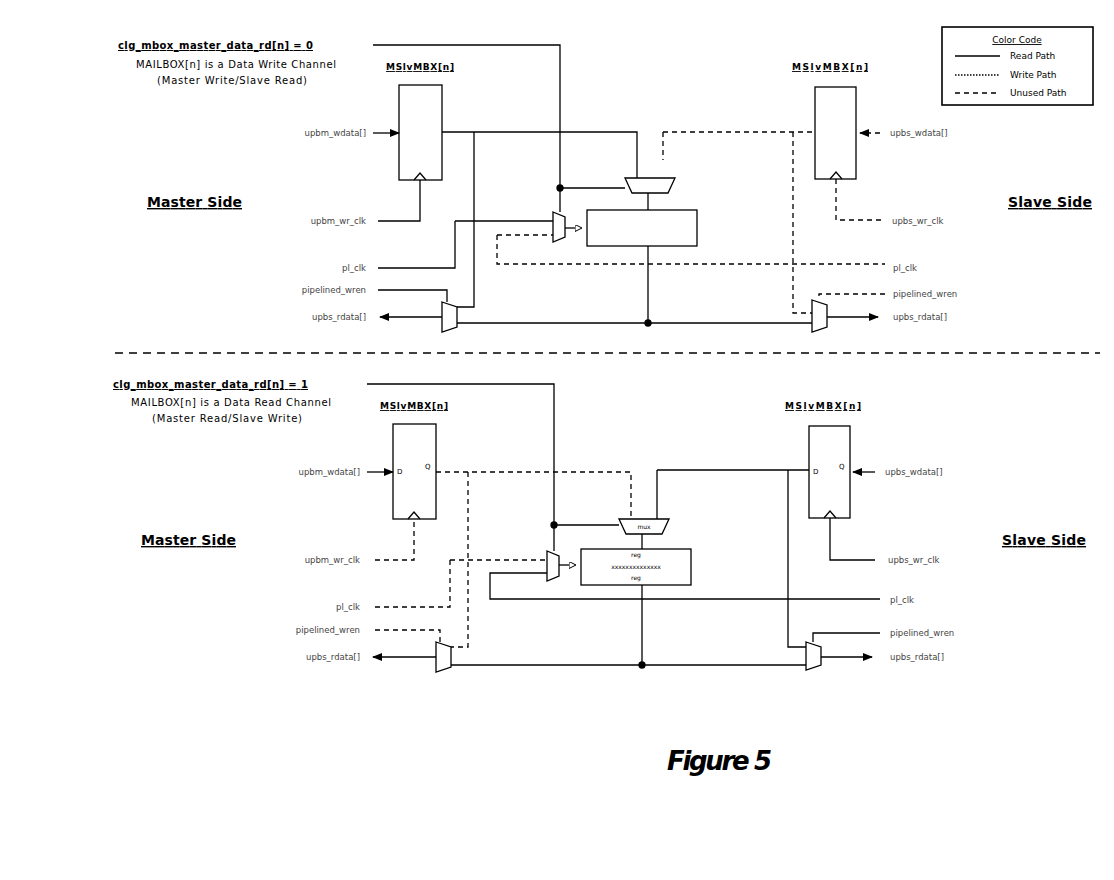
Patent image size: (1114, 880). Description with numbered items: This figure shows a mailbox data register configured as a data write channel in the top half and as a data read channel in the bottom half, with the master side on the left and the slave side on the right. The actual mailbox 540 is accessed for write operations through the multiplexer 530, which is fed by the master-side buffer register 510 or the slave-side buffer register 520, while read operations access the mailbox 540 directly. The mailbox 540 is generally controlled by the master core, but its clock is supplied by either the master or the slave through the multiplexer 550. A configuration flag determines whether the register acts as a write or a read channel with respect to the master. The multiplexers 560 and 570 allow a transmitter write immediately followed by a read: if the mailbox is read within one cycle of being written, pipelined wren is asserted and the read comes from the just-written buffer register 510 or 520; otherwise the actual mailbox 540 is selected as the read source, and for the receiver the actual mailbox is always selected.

The buffer register 510 is at (399, 101).
The buffer register 520 is at (855, 178).
The multiplexer 530 is at (675, 181).
The mailbox 540 is at (697, 215).
The multiplexer 550 is at (555, 214).
The multiplexer 560 is at (462, 307).
The multiplexer 570 is at (810, 314).